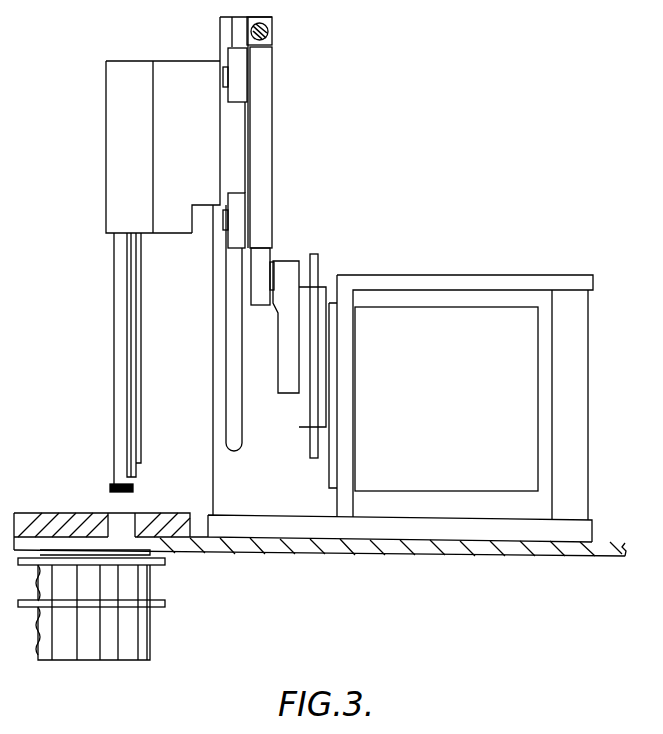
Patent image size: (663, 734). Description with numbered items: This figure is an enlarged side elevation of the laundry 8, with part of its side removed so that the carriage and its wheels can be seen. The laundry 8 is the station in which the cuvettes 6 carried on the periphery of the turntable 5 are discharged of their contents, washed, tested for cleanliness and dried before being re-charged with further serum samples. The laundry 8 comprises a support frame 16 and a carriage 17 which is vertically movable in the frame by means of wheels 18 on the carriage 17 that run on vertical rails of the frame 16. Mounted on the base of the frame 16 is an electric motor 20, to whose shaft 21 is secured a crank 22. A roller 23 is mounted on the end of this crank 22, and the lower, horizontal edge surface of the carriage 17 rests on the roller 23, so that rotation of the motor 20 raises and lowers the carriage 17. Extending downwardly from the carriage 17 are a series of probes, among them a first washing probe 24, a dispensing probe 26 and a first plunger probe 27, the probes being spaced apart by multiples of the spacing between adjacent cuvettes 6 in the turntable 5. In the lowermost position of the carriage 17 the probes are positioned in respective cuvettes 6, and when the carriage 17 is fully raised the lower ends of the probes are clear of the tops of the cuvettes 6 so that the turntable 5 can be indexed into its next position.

The turntable 5 is at (165, 561).
The cuvettes 6 is at (150, 636).
The laundry 8 is at (416, 270).
The support frame 16 is at (256, 522).
The carriage 17 is at (263, 72).
The wheels 18 is at (236, 88).
The electric motor 20 is at (420, 470).
The shaft 21 is at (330, 357).
The crank 22 is at (291, 380).
The roller 23 is at (260, 292).
The first washing probe 24 is at (128, 476).
The dispensing probe 26 is at (141, 452).
The first plunger probe 27 is at (110, 489).